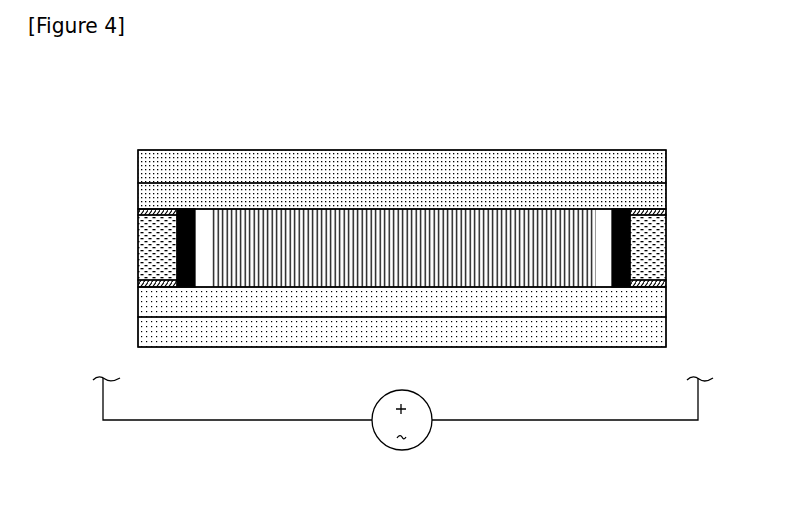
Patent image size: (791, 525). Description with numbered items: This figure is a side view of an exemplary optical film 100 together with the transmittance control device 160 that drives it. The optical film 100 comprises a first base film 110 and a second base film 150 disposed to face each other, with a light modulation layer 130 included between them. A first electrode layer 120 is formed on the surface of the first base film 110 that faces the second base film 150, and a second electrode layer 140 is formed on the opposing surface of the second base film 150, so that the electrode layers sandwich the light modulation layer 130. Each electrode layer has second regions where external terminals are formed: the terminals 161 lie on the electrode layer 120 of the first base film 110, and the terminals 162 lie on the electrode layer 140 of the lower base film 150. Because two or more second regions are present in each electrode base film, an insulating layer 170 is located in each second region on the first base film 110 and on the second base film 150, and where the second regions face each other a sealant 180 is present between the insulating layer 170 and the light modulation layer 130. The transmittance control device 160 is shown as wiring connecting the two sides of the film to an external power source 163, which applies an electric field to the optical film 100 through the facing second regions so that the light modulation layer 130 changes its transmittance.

The optical film 100 is at (128, 96).
The first base film 110 is at (666, 167).
The first electrode layer 120 is at (666, 193).
The light modulation layer 130 is at (305, 287).
The second electrode layer 140 is at (666, 305).
The second base film 150 is at (666, 330).
The transmittance control device 160 is at (208, 420).
The terminals on the electrode layer on the first base film 161 is at (666, 212).
The terminals on the electrode layer on the lower base film 162 is at (666, 284).
The external power source 163 is at (401, 450).
The insulating layer 170 is at (138, 246).
The sealant 180 is at (187, 209).